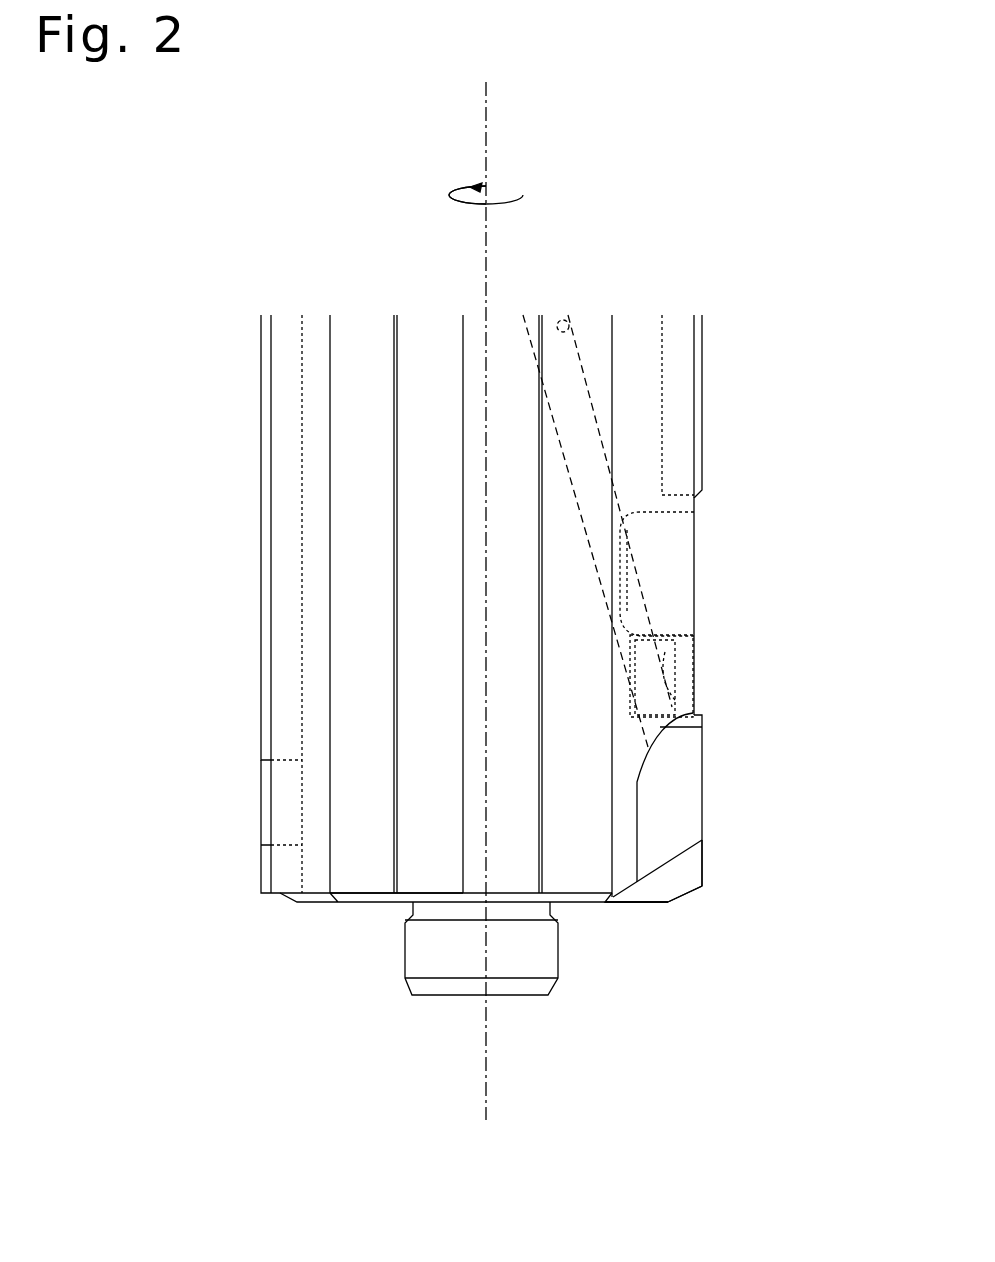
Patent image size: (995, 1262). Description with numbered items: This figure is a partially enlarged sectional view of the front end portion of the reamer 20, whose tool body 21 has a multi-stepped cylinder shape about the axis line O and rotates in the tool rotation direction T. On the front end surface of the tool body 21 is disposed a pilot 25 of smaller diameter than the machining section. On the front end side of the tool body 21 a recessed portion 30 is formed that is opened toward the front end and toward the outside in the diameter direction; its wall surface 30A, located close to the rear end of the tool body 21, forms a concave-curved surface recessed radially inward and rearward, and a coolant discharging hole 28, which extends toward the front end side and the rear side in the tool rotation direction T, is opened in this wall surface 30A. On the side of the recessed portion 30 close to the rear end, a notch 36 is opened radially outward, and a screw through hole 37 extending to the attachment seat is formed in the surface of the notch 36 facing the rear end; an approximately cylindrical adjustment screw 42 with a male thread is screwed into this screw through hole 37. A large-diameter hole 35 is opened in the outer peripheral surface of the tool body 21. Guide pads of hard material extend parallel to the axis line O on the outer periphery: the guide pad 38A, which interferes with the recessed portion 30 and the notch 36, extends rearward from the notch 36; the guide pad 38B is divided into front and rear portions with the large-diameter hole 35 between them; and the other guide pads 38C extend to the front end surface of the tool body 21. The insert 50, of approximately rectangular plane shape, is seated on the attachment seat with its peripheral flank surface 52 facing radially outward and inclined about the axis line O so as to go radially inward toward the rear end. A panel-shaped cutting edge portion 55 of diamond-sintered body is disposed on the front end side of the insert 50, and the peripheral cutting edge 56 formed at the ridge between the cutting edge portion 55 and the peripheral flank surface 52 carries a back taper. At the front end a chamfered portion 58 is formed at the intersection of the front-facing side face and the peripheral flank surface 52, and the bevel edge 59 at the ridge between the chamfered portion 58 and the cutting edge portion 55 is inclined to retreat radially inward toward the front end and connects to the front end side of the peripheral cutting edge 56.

The reamer 20 is at (467, 517).
The tool body 21 is at (218, 421).
The pilot 25 is at (438, 960).
The coolant discharging hole 28 is at (569, 332).
The recessed portion 30 is at (754, 709).
The wall surface 30A is at (660, 732).
The large-diameter hole 35 is at (292, 762).
The notch 36 is at (720, 556).
The screw through hole 37 is at (687, 680).
The guide pad 38A is at (684, 366).
The guide pad 38B is at (287, 470).
The guide pads 38C is at (355, 872).
The adjustment screw 42 is at (680, 695).
The insert 50 is at (733, 846).
The peripheral flank surface 52 is at (702, 800).
The cutting edge portion 55 is at (675, 875).
The peripheral cutting edge 56 is at (703, 865).
The chamfered portion 58 is at (700, 895).
The bevel edge 59 is at (690, 905).
The axis line O is at (486, 156).
The tool rotation direction T is at (477, 182).